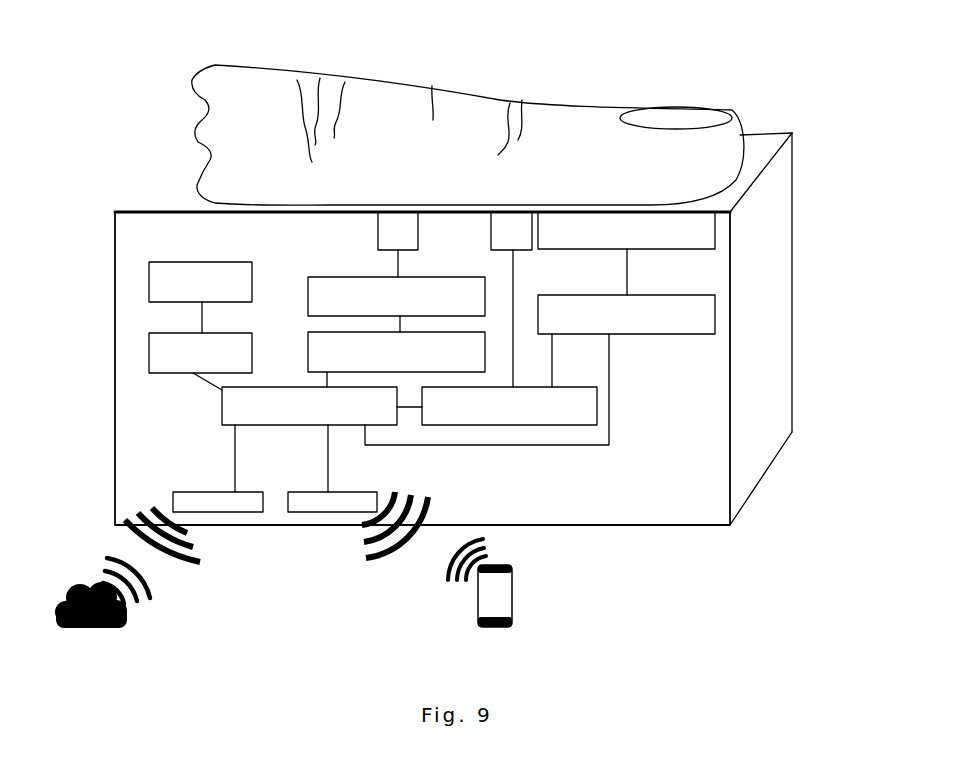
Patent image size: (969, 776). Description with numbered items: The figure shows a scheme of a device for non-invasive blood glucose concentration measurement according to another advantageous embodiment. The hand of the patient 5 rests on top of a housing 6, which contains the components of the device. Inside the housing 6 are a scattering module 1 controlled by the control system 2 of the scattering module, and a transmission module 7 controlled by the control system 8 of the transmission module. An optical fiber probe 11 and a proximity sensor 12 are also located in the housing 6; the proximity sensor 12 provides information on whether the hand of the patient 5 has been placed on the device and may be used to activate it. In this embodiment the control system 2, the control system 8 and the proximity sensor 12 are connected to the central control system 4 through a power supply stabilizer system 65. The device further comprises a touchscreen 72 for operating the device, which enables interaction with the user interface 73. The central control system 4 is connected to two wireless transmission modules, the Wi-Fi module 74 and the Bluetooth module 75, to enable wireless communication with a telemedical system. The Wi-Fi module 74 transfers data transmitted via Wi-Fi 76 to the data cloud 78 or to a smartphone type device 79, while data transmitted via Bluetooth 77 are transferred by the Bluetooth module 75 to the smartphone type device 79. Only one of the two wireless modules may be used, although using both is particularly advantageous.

The hand of the patient 5 is at (433, 90).
The housing 6 is at (770, 193).
The transmission module 7 is at (696, 236).
The control system of the transmission module 8 is at (696, 314).
The optical fiber probe 11 is at (380, 228).
The proximity sensor 12 is at (526, 242).
The scattering module 1 is at (330, 284).
The control system of the scattering module 2 is at (328, 342).
The touchscreen 72 is at (228, 355).
The user interface 73 is at (205, 280).
The central control system 4 is at (232, 408).
The power supply stabilizer system 65 is at (560, 423).
The Wi-Fi module 74 is at (186, 498).
The Bluetooth module 75 is at (362, 498).
The data transmitted via Wi-Fi 76 is at (200, 557).
The data transmitted via Bluetooth 77 is at (360, 548).
The data cloud 78 is at (70, 596).
The smartphone type device 79 is at (480, 598).